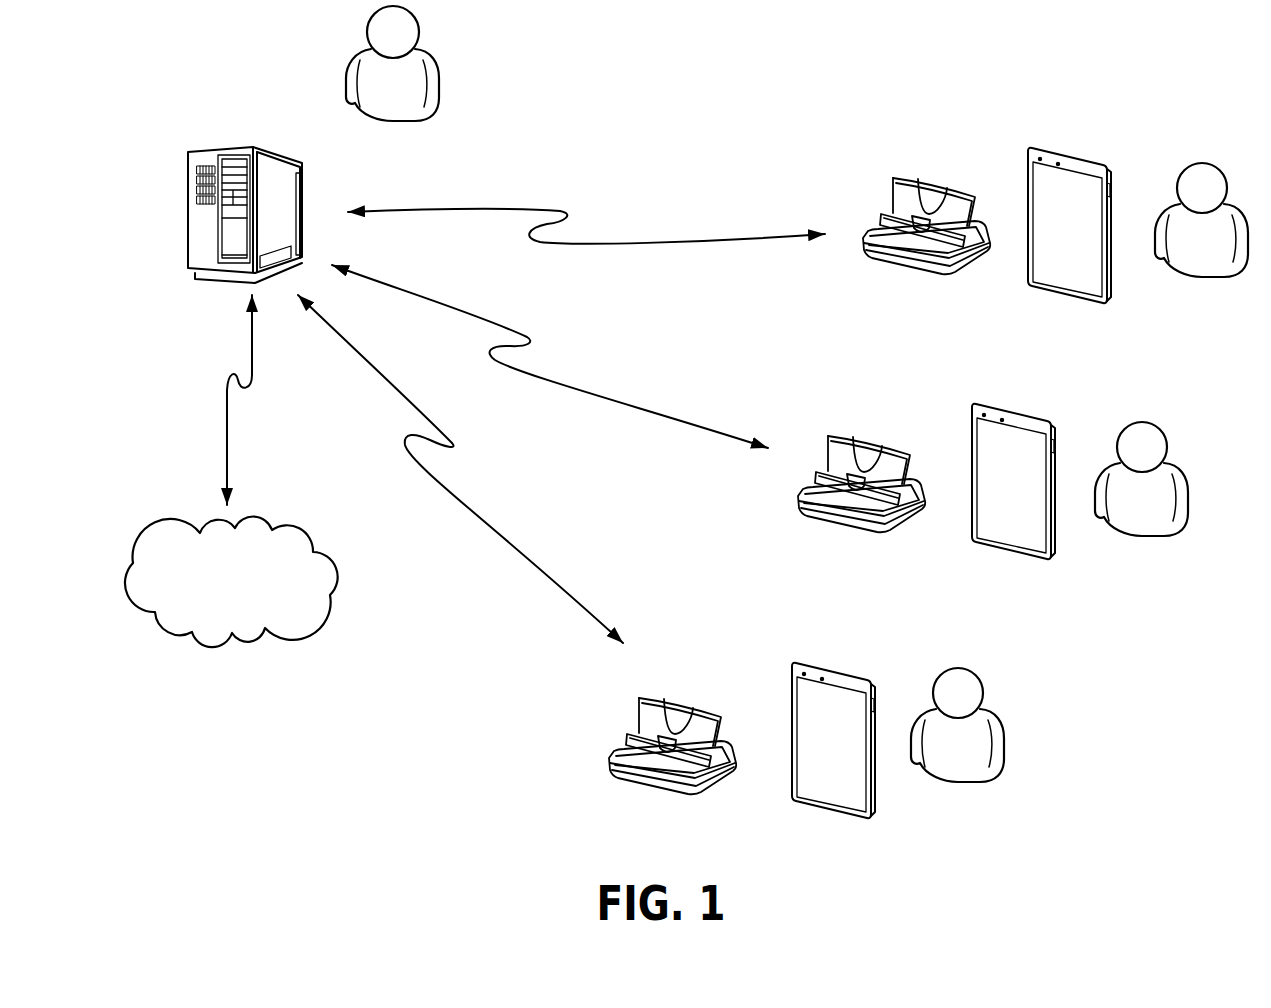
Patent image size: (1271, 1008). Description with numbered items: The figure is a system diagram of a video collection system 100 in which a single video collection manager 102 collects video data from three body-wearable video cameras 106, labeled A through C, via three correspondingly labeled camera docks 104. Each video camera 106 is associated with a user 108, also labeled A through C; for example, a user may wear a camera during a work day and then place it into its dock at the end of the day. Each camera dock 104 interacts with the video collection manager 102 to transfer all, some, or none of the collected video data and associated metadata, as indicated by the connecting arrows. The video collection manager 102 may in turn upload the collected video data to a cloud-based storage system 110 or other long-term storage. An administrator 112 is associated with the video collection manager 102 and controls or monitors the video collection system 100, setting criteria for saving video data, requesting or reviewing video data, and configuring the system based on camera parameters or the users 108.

The video collection system 100 is at (808, 63).
The video collection manager 102 is at (180, 166).
The camera dock 104 is at (938, 172).
The body-wearable video camera 106 is at (1072, 143).
The user 108 is at (1215, 160).
The cloud-based storage system 110 is at (133, 548).
The administrator 112 is at (458, 77).